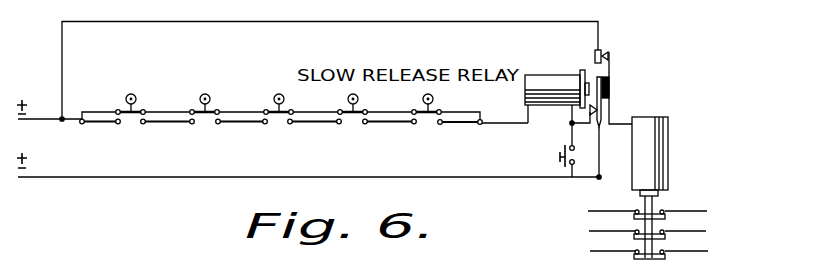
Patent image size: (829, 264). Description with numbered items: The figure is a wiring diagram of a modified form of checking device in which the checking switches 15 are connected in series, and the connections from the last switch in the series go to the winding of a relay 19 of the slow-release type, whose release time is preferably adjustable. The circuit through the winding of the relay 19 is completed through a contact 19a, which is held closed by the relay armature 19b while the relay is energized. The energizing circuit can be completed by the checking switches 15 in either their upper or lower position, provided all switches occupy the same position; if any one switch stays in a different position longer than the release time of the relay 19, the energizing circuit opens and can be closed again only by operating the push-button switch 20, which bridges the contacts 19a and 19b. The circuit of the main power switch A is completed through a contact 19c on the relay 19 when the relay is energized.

The checking switches 15 is at (200, 96).
The relay 19 is at (550, 76).
The contact 19a is at (572, 118).
The relay armature 19b is at (610, 103).
The contact 19c is at (610, 64).
The push-button switch 20 is at (560, 158).
The main power switch A is at (668, 160).